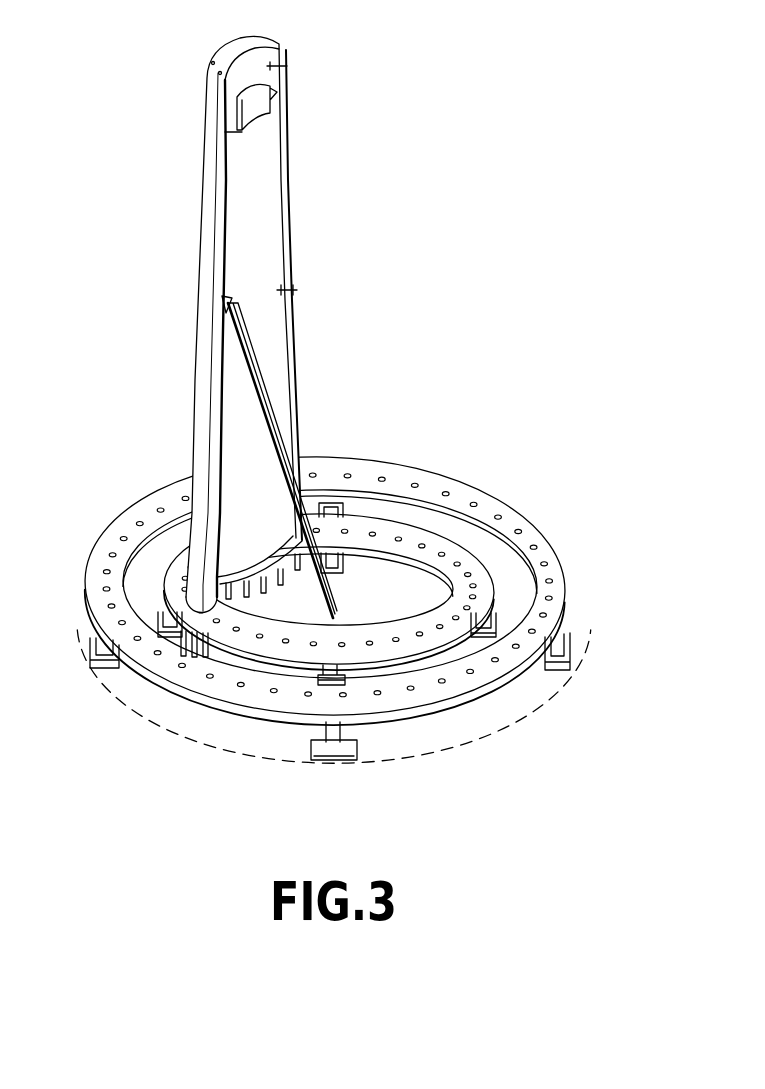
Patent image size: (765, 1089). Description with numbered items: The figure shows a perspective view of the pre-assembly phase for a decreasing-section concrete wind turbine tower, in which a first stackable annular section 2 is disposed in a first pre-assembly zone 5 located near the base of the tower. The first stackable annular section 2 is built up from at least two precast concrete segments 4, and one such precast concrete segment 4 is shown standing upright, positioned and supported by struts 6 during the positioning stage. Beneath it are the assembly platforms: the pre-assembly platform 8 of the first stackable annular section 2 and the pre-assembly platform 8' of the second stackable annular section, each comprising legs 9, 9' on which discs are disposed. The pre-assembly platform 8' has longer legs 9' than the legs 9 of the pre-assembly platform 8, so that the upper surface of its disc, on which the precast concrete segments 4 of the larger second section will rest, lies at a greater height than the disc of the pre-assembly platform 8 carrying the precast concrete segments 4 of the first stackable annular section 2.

The first stackable annular section 2 is at (243, 324).
The precast concrete segment 4 is at (265, 217).
The strut 6 is at (272, 417).
The pre-assembly zone 5 is at (583, 626).
The pre-assembly platform 8 is at (337, 669).
The pre-assembly platform 8' is at (343, 624).
The legs 9 is at (407, 581).
The legs 9' is at (330, 737).